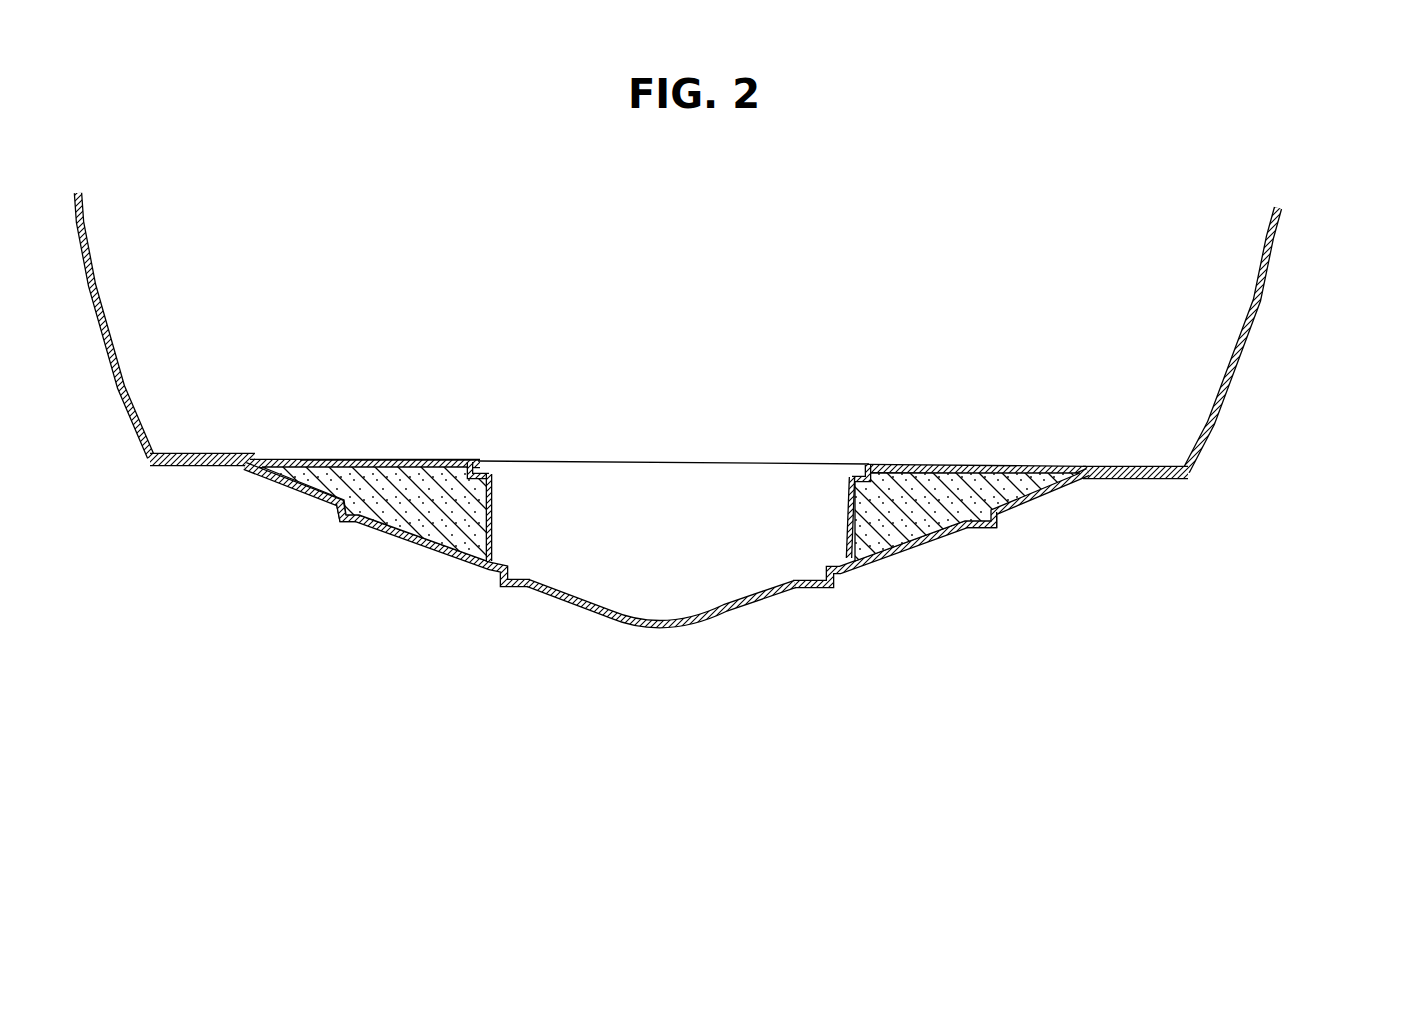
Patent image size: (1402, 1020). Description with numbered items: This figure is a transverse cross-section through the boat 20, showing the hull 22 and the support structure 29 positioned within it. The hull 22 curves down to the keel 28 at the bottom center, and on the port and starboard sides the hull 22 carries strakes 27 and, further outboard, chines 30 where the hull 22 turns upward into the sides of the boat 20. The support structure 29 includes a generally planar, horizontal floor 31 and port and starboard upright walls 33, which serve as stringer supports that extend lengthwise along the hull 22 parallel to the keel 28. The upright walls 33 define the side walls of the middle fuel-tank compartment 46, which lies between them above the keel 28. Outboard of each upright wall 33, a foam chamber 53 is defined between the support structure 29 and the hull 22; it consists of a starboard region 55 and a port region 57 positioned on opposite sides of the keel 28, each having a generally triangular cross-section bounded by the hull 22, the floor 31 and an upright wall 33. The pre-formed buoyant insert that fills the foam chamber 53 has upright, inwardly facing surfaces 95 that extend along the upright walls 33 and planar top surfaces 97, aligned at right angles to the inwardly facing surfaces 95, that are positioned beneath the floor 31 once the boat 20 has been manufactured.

The boat 20 is at (730, 430).
The hull 22 is at (1242, 384).
The strakes 27 is at (346, 516).
The keel 28 is at (666, 567).
The support structure 29 is at (418, 452).
The chines 30 is at (151, 465).
The floor 31 is at (316, 459).
The upright walls 33 is at (490, 488).
The middle fuel-tank compartment 46 is at (663, 498).
The foam chamber 53 is at (671, 506).
The starboard region 55 is at (868, 557).
The port region 57 is at (413, 526).
The inwardly facing surfaces 95 is at (669, 494).
The top surfaces 97 is at (371, 474).